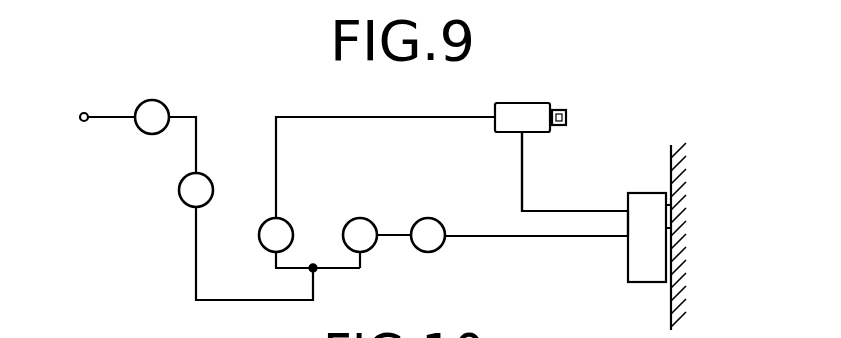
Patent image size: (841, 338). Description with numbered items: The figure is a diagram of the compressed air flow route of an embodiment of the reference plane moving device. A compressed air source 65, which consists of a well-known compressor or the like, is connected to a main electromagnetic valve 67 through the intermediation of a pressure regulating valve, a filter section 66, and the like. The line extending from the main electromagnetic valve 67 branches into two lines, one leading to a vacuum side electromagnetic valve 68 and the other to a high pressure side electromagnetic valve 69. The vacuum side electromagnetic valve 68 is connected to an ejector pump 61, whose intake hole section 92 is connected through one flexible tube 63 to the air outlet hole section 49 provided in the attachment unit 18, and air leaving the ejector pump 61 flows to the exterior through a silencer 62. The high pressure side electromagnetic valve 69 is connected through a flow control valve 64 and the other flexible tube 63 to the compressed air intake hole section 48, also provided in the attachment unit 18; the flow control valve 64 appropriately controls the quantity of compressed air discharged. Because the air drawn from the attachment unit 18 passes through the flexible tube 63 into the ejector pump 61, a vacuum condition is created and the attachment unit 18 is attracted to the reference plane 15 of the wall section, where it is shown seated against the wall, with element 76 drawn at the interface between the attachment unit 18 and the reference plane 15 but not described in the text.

The reference plane 15 is at (670, 158).
The attachment unit 18 is at (646, 281).
The compressed air intake hole section 48 is at (628, 240).
The air outlet hole section 49 is at (628, 207).
The ejector pump 61 is at (528, 110).
The silencer 62 is at (560, 112).
The flexible tubes 63 is at (525, 178).
The flow control valve 64 is at (428, 228).
The compressed air source 65 is at (85, 112).
The filter section 66 is at (158, 112).
The main electromagnetic valve 67 is at (180, 190).
The vacuum side electromagnetic valve 68 is at (282, 228).
The high pressure side electromagnetic valve 69 is at (363, 228).
The mounting element 76 is at (668, 216).
The intake hole section 92 is at (515, 135).